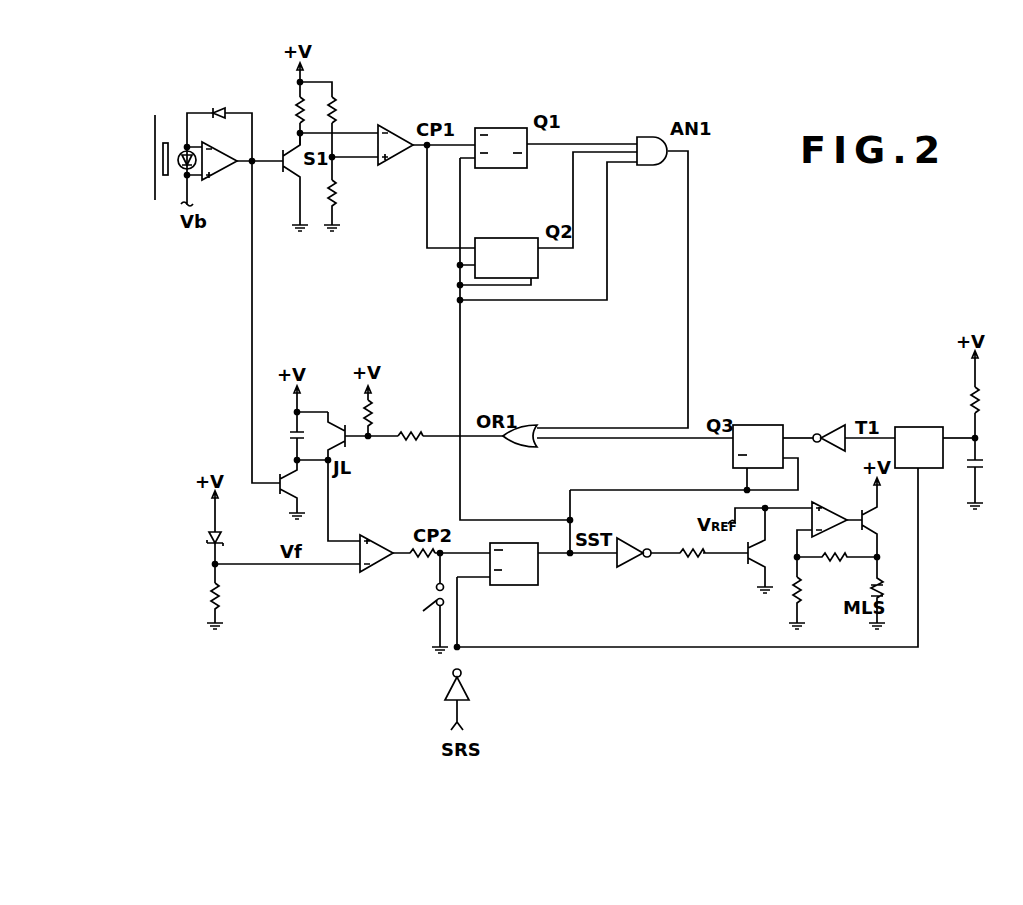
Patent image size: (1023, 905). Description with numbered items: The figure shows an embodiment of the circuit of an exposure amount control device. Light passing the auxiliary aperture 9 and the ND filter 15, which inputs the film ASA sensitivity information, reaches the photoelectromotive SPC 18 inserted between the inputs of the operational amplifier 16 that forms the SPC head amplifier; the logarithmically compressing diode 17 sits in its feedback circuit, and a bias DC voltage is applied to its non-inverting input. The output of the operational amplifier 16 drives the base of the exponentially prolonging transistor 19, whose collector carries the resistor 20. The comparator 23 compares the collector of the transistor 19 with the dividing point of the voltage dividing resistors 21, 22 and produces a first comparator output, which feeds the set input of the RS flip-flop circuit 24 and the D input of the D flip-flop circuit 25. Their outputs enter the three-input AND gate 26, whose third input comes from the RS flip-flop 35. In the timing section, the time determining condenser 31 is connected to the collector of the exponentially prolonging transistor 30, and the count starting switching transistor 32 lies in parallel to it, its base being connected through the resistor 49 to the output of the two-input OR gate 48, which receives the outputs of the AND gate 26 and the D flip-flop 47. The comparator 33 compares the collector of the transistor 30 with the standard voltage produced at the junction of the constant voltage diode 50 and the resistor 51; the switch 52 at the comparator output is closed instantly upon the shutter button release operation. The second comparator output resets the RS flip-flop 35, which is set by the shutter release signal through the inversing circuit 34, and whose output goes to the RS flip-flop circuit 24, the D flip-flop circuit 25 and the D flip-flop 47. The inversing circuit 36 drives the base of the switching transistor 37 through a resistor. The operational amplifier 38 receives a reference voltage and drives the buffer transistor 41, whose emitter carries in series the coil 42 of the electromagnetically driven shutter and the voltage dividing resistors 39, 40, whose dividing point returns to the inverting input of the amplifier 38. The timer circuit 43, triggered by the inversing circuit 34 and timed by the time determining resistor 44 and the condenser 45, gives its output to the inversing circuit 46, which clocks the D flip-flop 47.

The auxiliary aperture 9 is at (152, 120).
The ND filter 15 is at (161, 165).
The operational amplifier 16 is at (218, 180).
The logarithmically compressing diode 17 is at (218, 106).
The photoelectromotive SPC 18 is at (179, 171).
The exponentially prolonging transistor 19 is at (281, 172).
The resistor 20 is at (297, 105).
The voltage dividing resistor 21 is at (335, 105).
The voltage dividing resistor 22 is at (337, 195).
The comparator 23 is at (403, 163).
The RS flip-flop circuit 24 is at (508, 168).
The D flip-flop circuit 25 is at (544, 270).
The AND gate 26 is at (652, 168).
The exponentially prolonging transistor 30 is at (276, 492).
The time determining condenser 31 is at (290, 432).
The count starting switching transistor 32 is at (348, 447).
The comparator 33 is at (384, 571).
The inversing circuit 34 is at (470, 678).
The RS flip-flop 35 is at (520, 585).
The inversing circuit 36 is at (632, 565).
The switching transistor 37 is at (745, 565).
The operational amplifier 38 is at (836, 502).
The voltage dividing resistor 39 is at (838, 561).
The voltage dividing resistor 40 is at (800, 592).
The buffer transistor 41 is at (874, 522).
The coil 42 is at (882, 585).
The timer circuit 43 is at (916, 425).
The time determining resistor 44 is at (980, 402).
The condenser 45 is at (984, 464).
The inversing circuit 46 is at (832, 421).
The D flip-flop 47 is at (747, 421).
The OR gate 48 is at (527, 424).
The resistor 49 is at (404, 433).
The constant voltage diode 50 is at (207, 535).
The resistor 51 is at (208, 592).
The switch 52 is at (422, 611).